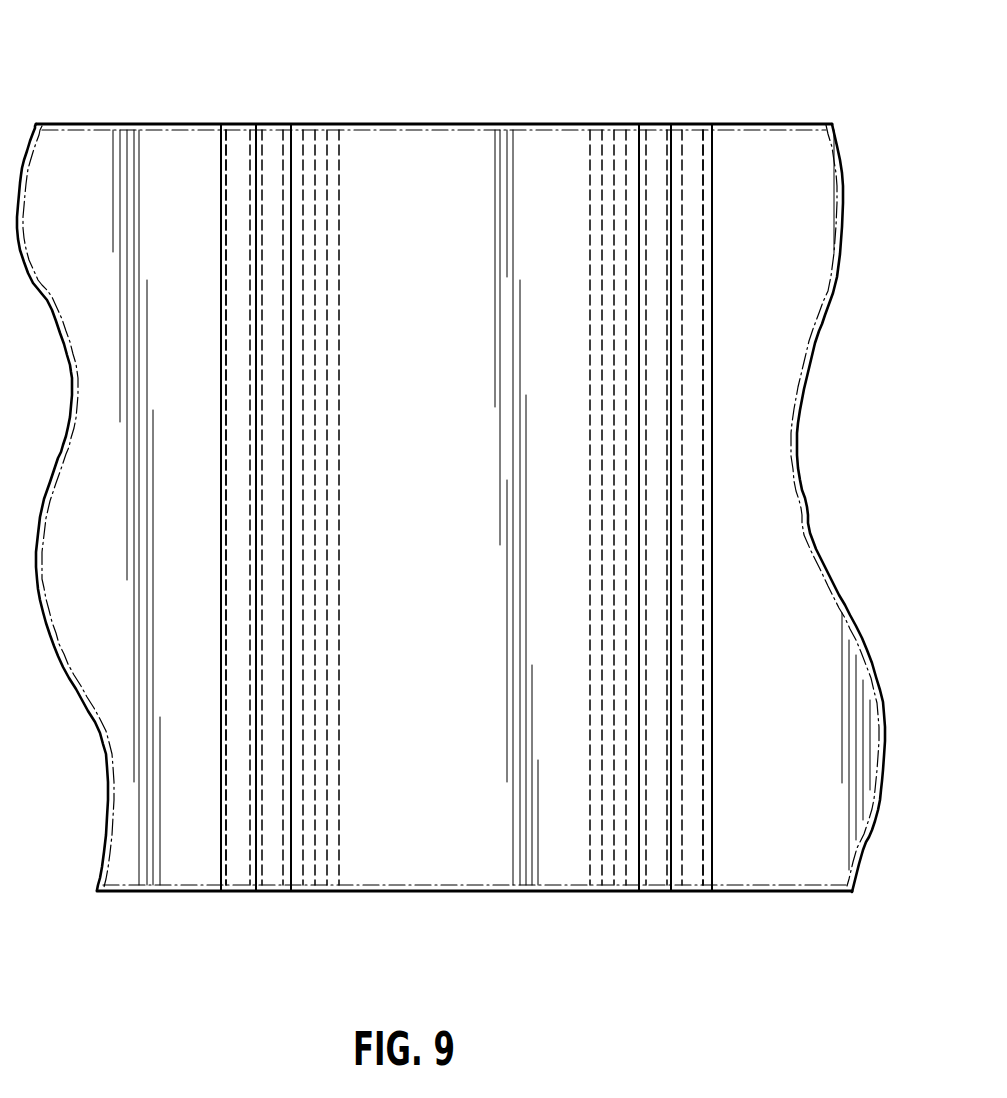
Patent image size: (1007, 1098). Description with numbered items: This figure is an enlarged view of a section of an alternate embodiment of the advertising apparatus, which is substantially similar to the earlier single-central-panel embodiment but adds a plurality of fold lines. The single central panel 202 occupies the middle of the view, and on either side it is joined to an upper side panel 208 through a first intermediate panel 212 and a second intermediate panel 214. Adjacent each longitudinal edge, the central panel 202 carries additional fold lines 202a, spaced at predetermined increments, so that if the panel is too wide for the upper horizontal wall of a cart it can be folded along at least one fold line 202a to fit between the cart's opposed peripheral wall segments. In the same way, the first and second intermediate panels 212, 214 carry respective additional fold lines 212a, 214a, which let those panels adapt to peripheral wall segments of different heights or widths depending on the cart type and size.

The central panel 202 is at (482, 498).
The fold lines 202a is at (328, 163).
The upper side panel 208 is at (117, 498).
The first intermediate panel 212 is at (277, 130).
The fold lines 212a is at (647, 175).
The second intermediate panel 214 is at (240, 130).
The fold lines 214a is at (226, 163).